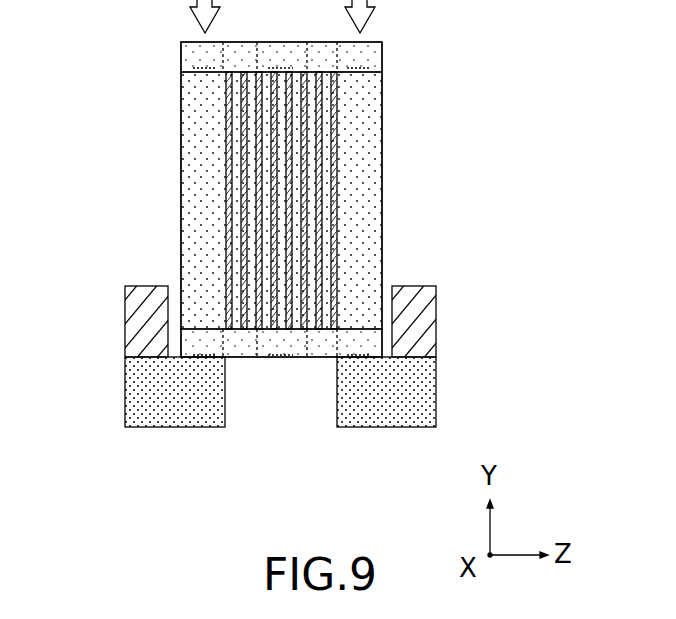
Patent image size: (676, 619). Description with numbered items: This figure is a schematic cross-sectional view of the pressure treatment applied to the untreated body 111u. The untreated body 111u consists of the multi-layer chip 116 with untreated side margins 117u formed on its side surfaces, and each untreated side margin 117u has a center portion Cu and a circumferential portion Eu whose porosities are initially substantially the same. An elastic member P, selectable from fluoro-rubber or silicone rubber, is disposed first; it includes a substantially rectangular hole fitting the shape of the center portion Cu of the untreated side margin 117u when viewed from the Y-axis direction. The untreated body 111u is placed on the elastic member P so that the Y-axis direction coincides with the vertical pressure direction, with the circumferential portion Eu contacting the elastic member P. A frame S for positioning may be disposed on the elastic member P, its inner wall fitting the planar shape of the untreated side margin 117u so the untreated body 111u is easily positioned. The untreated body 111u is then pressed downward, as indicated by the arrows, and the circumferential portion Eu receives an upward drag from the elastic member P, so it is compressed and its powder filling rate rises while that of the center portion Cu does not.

The untreated body 111u is at (138, 52).
The multi-layer chip 116 is at (385, 202).
The untreated side margin 117u is at (385, 67).
The frame S is at (129, 301).
The elastic member P is at (128, 380).